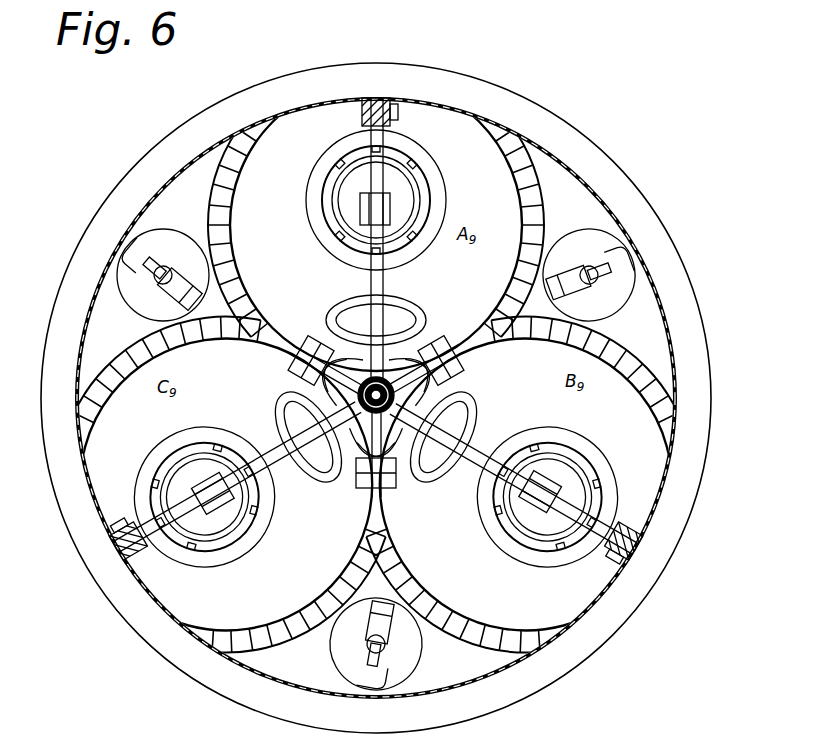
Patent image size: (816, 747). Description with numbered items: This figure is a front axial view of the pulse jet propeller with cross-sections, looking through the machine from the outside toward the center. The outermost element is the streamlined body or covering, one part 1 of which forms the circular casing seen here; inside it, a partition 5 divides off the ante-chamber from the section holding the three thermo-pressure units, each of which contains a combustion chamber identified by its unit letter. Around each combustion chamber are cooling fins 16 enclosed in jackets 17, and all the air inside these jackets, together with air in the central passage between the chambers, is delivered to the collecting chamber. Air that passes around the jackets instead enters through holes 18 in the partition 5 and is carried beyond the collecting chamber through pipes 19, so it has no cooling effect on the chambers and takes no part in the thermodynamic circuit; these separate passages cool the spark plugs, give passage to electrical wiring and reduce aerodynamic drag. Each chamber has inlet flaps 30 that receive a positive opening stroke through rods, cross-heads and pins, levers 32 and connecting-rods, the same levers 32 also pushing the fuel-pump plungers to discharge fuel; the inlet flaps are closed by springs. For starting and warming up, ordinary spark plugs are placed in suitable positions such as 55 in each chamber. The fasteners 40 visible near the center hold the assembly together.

The streamlined body part 1 is at (137, 614).
The partition 5 is at (571, 207).
The cooling fins 16 is at (541, 167).
The jackets 17 is at (655, 333).
The holes 18 is at (180, 233).
The pipes 19 is at (142, 245).
The inlet flaps 30 is at (397, 178).
The levers 32 is at (372, 260).
The nut 40 is at (290, 362).
The spark plug position 55 is at (170, 293).